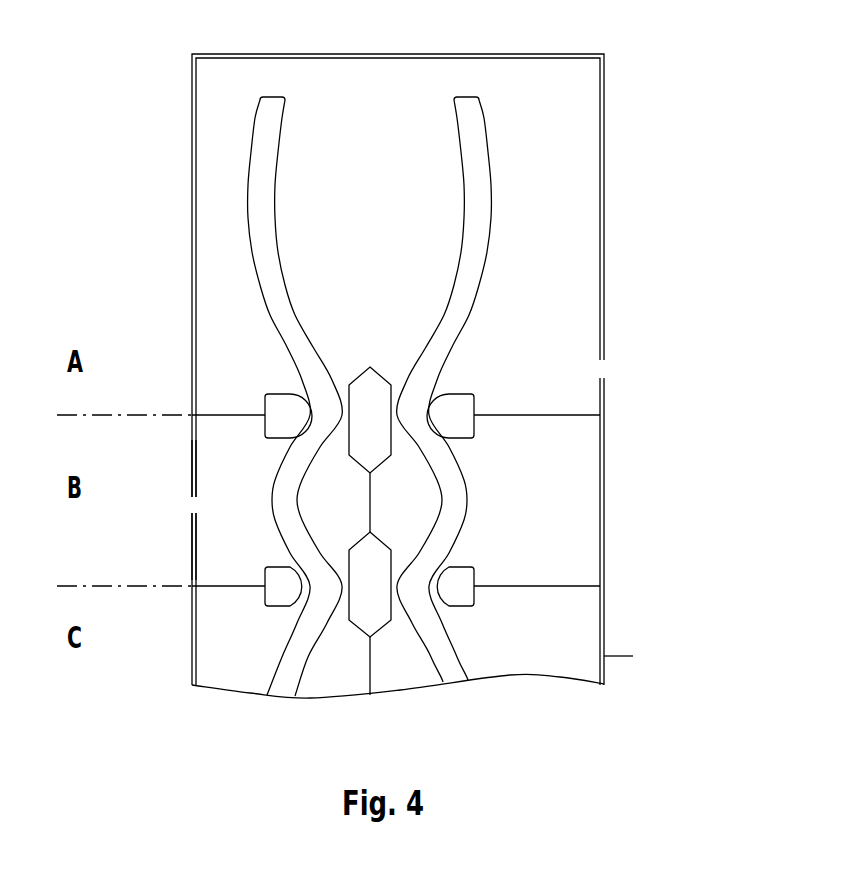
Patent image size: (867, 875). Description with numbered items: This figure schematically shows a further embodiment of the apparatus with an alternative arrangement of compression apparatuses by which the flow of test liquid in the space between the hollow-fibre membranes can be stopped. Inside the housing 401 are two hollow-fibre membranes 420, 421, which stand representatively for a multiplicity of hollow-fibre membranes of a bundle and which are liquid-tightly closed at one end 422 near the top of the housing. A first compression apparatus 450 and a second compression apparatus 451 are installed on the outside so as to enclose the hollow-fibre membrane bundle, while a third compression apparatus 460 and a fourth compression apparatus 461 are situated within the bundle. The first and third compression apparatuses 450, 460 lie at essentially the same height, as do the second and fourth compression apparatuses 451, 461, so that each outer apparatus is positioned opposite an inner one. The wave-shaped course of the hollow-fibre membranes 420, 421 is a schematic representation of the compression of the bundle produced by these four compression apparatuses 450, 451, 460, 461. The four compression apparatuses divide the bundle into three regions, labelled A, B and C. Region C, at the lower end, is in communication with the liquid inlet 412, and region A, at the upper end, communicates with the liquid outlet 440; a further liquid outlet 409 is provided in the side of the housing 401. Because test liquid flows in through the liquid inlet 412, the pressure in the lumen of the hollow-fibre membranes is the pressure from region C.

The housing 401 is at (605, 168).
The further liquid outlet 409 is at (192, 505).
The liquid inlet 412 is at (545, 668).
The hollow-fibre membrane 420 is at (280, 692).
The hollow-fibre membrane 421 is at (455, 679).
The liquid-tightly closed end of hollow-fibre membranes 422 is at (268, 96).
The liquid outlet 440 is at (605, 371).
The first compression apparatus 450 is at (463, 395).
The second compression apparatus 451 is at (463, 567).
The third compression apparatus 460 is at (372, 366).
The fourth compression apparatus 461 is at (378, 632).